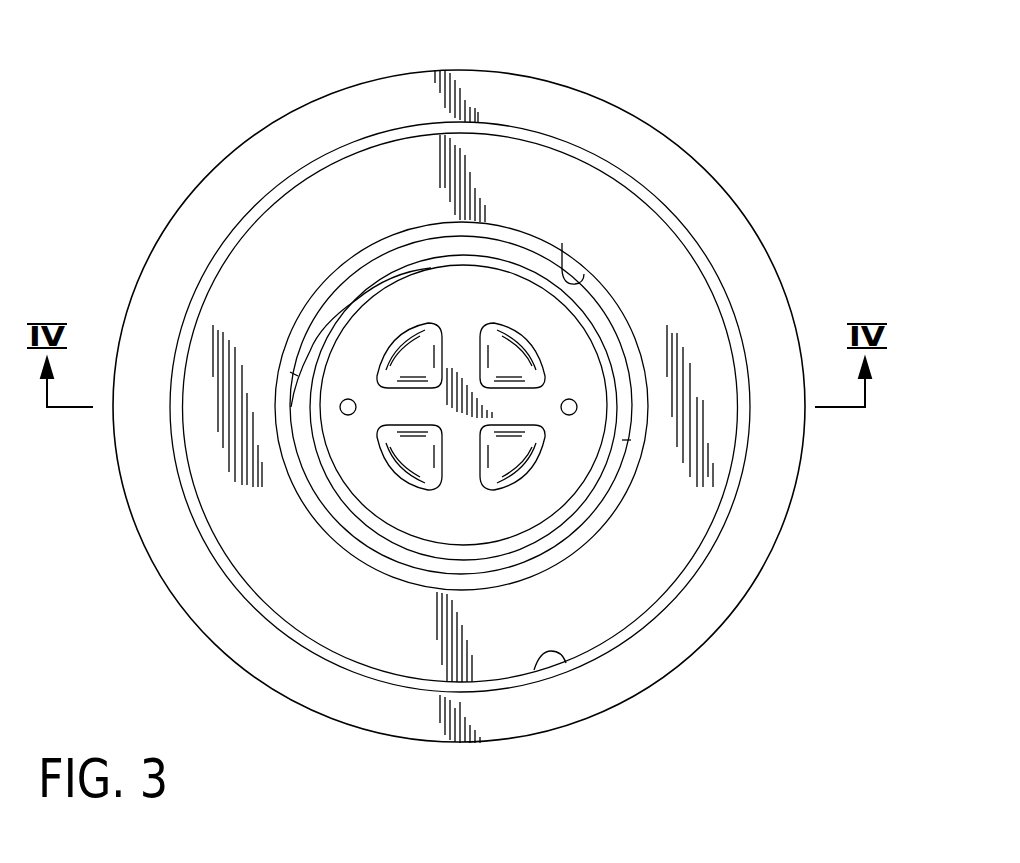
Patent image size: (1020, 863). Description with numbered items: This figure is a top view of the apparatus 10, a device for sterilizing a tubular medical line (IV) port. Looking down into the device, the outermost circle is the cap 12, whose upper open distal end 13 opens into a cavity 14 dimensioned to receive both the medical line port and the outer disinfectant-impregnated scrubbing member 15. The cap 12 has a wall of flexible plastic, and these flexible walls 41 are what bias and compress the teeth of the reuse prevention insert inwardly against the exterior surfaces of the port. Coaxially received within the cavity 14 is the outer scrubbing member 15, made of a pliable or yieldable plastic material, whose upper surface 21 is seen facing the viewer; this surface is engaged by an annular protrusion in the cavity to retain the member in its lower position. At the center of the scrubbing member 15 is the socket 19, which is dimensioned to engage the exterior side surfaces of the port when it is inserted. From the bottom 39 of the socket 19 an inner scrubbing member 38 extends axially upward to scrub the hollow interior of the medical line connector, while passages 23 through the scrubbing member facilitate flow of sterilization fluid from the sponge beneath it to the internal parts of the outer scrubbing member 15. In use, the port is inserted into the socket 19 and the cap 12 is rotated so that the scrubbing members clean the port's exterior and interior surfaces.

The apparatus 10 is at (795, 90).
The cap 12 is at (772, 540).
The upper open distal end 13 is at (634, 145).
The cavity 14 is at (567, 653).
The outer disinfectant-impregnated scrubbing member 15 is at (695, 318).
The socket 19 is at (562, 243).
The upper surface 21 is at (287, 227).
The passages 23 is at (578, 402).
The inner scrubbing member 38 is at (442, 472).
The bottom 39 is at (362, 480).
The flexible walls 41 is at (705, 640).